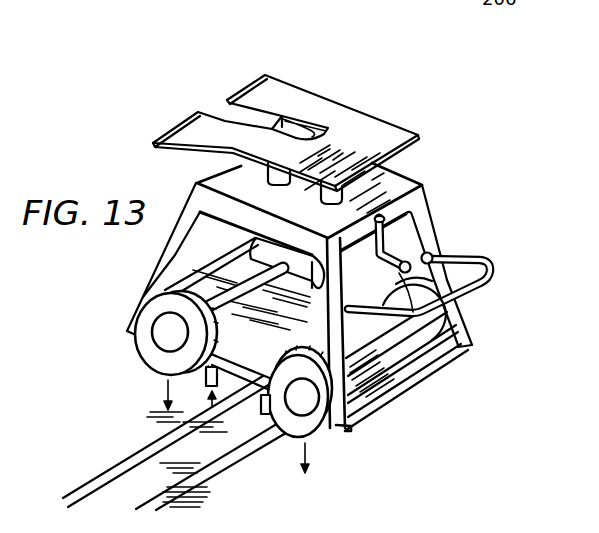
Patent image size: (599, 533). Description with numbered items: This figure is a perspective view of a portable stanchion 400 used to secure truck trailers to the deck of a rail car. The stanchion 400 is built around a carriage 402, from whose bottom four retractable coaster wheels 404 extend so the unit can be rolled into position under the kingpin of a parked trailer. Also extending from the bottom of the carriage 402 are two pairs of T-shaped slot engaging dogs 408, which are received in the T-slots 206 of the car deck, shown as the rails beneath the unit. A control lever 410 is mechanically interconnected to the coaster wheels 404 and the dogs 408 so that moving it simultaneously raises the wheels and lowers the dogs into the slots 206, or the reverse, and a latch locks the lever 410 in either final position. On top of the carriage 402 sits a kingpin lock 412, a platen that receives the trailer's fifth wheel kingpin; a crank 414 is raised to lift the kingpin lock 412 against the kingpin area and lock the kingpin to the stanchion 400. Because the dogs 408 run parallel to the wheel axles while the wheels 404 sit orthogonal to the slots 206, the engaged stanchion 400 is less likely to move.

The T-slots 206 is at (171, 484).
The portable stanchion 400 is at (214, 67).
The carriage 402 is at (428, 195).
The retractable coaster wheels 404 is at (150, 352).
The T-shaped slot engaging dogs 408 is at (265, 421).
The control lever 410 is at (490, 272).
The kingpin lock 412 is at (388, 131).
The crank 414 is at (448, 338).